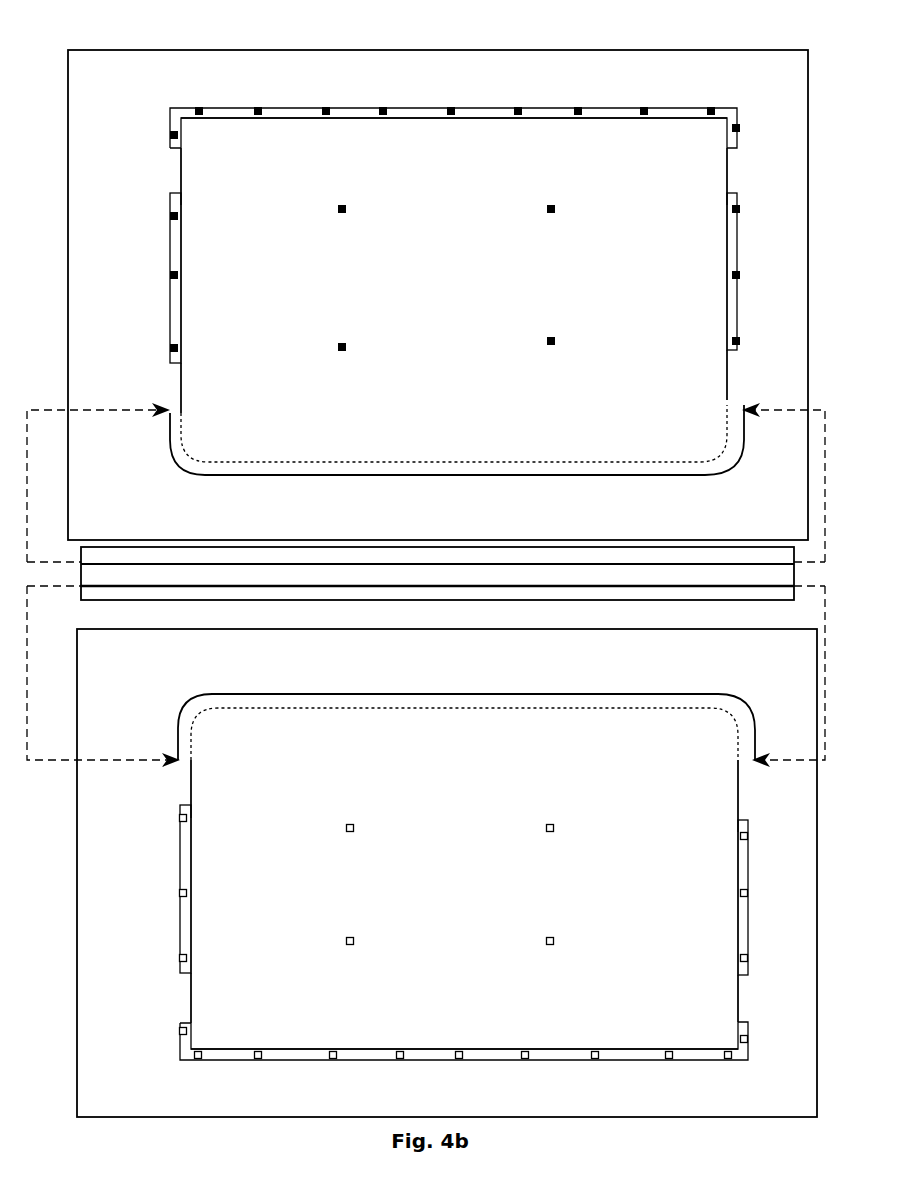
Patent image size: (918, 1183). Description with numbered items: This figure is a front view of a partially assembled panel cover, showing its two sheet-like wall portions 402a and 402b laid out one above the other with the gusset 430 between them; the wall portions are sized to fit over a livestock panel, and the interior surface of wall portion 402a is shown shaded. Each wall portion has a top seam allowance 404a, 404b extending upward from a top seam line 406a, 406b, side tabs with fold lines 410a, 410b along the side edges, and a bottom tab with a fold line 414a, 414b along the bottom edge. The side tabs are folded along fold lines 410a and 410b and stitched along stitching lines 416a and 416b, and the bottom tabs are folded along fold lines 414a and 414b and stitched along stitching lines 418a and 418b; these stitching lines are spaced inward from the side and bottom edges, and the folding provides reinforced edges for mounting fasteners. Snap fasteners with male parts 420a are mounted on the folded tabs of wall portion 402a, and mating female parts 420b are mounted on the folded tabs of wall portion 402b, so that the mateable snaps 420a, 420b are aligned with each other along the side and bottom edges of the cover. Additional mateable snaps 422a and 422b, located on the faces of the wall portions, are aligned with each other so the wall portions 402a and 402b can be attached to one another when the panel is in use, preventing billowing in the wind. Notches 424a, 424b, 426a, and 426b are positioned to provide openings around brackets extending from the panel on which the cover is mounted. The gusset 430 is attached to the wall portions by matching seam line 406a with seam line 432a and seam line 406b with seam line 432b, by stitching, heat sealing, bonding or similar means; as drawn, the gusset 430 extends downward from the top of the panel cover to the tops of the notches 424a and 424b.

The wall portion 402a is at (454, 265).
The wall portion 402b is at (464, 904).
The top seam allowance 404a is at (170, 448).
The top seam allowance 404b is at (199, 700).
The top seam line 406a is at (243, 455).
The top seam line 406b is at (182, 720).
The fold line 410a is at (170, 196).
The fold line 410b is at (180, 970).
The fold line 414a is at (236, 107).
The fold line 414b is at (378, 1060).
The stitching line 416a is at (183, 205).
The stitching line 416b is at (180, 810).
The stitching line 418a is at (228, 121).
The stitching line 418b is at (359, 1050).
The male snap parts 420a is at (451, 109).
The female snap parts 420b is at (180, 958).
The mateable snaps 422a is at (551, 343).
The mateable snaps 422b is at (549, 826).
The notch 424a is at (183, 180).
The notch 424b is at (191, 782).
The notch 426a is at (183, 390).
The notch 426b is at (193, 994).
The gusset 430 is at (153, 610).
The seam line 432a is at (200, 565).
The seam line 432b is at (612, 587).